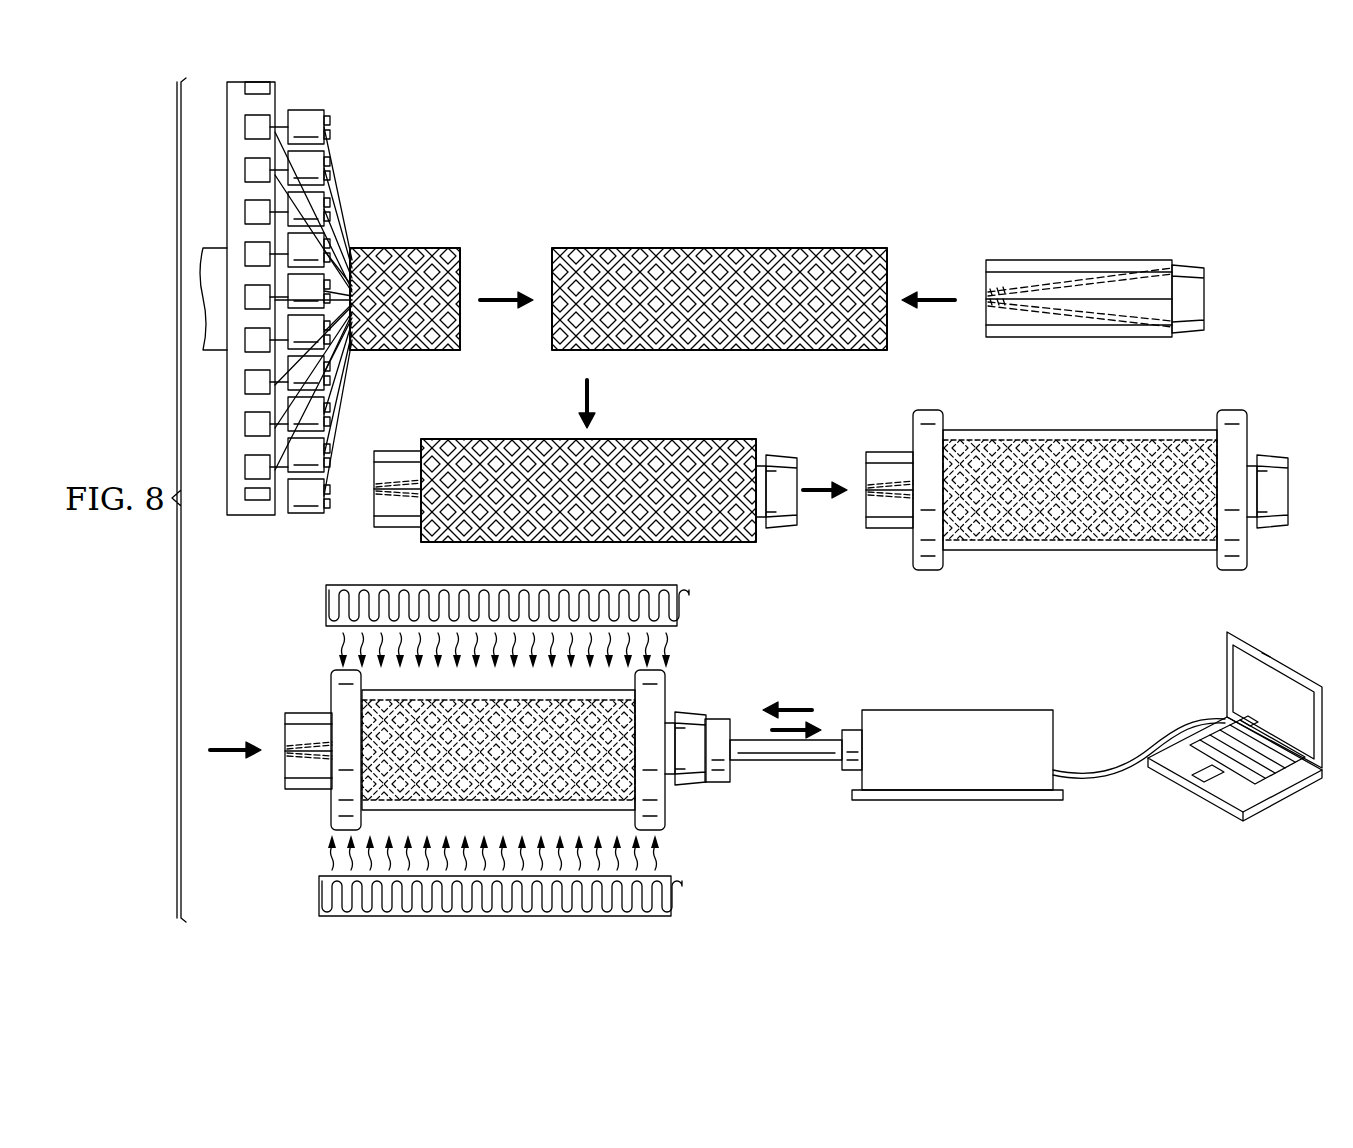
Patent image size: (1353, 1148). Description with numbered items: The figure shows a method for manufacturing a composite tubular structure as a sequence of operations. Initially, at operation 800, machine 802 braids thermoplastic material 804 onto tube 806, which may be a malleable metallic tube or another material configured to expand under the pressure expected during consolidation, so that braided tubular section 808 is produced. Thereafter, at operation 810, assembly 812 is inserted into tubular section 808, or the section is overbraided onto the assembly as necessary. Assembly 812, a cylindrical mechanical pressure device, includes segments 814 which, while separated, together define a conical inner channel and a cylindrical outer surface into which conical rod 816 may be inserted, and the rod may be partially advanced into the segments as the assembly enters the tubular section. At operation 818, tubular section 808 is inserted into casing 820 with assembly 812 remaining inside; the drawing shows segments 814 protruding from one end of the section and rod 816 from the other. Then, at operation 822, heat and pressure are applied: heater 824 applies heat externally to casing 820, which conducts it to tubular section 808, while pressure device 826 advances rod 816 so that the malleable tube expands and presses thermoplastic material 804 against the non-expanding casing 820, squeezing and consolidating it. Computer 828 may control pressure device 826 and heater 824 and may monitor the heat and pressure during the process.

The operation 800 is at (567, 177).
The machine 802 is at (230, 523).
The thermoplastic material 804 is at (347, 199).
The tube 806 is at (440, 248).
The braided tubular section 808 is at (724, 244).
The operation 810 is at (1146, 213).
The assembly 812 is at (1082, 258).
The segments 814 is at (1000, 258).
The conical rod 816 is at (1190, 265).
The operation 818 is at (838, 572).
The casing 820 is at (1080, 430).
The operation 822 is at (780, 848).
The heater 824 is at (324, 604).
The pressure device 826 is at (961, 806).
The computer 828 is at (1282, 802).